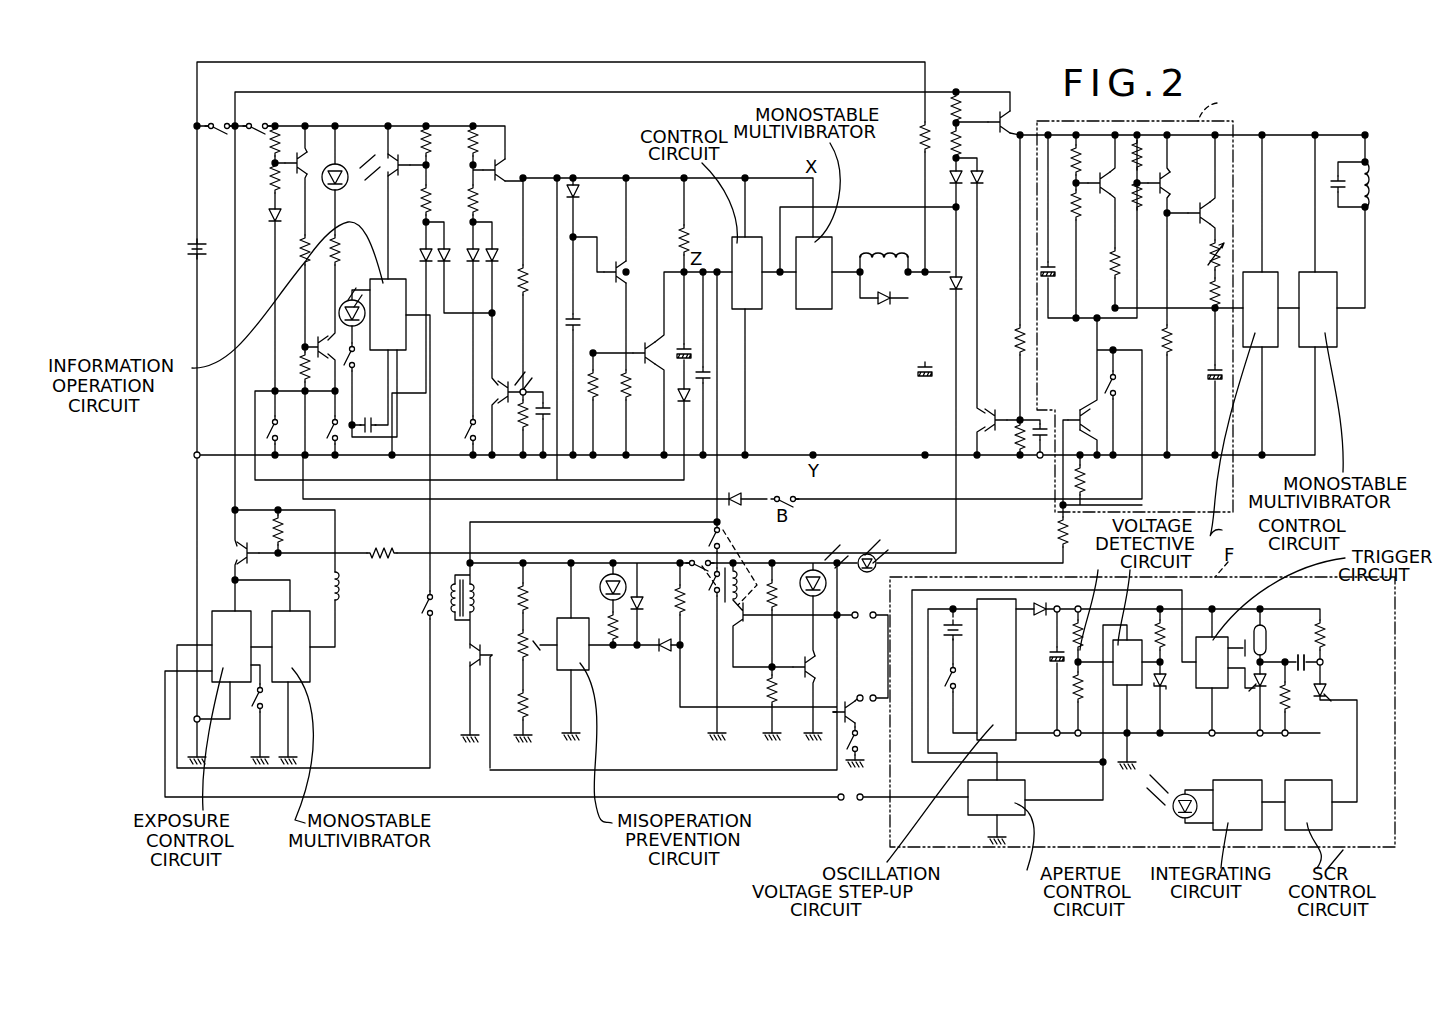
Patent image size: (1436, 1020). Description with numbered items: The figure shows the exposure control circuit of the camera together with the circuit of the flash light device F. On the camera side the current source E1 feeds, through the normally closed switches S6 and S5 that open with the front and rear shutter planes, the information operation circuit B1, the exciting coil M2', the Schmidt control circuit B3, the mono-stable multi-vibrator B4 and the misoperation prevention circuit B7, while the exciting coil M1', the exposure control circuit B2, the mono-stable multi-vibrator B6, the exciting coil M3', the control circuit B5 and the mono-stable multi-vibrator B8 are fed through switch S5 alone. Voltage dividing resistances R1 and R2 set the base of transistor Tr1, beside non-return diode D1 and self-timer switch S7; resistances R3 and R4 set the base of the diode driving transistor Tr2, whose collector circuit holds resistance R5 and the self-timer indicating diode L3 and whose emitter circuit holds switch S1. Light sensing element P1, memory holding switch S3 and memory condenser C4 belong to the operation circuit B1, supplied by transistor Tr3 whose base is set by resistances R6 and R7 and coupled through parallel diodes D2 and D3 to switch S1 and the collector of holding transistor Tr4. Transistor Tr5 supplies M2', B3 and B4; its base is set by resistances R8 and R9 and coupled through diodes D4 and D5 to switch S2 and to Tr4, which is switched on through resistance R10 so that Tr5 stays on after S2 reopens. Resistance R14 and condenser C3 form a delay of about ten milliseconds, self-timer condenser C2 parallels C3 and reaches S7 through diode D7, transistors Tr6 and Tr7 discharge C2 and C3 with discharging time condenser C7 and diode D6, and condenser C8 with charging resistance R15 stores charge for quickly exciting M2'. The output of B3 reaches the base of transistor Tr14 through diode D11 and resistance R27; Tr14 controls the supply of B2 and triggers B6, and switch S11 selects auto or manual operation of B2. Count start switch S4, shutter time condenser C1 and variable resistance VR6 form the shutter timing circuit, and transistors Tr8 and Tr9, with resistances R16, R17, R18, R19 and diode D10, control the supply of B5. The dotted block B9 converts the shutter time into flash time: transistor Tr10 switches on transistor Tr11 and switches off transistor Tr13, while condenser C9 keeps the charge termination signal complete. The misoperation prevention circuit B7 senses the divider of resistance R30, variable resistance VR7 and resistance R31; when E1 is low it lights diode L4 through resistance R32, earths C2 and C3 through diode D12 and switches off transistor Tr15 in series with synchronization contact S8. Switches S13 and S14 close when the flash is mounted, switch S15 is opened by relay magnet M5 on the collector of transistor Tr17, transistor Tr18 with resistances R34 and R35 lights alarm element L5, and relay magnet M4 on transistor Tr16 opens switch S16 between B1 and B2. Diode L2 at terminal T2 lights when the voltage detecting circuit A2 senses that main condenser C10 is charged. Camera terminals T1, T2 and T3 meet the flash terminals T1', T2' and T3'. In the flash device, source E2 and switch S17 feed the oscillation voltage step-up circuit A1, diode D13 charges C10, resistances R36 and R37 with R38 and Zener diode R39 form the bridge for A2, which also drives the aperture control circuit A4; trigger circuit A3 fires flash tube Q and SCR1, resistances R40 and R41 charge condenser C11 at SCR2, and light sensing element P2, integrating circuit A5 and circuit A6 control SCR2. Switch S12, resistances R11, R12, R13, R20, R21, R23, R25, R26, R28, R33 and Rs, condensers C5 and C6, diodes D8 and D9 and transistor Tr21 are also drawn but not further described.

The normally closed switch S5 is at (219, 117).
The normally closed switch S6 is at (257, 117).
The current source E1 is at (208, 249).
The voltage dividing resistance R1 is at (267, 141).
The voltage dividing resistance R2 is at (266, 178).
The non-return diode D1 is at (267, 217).
The transistor Tr1 is at (305, 160).
The voltage dividing resistance R3 is at (296, 250).
The voltage dividing resistance R4 is at (296, 367).
The resistance R5 is at (346, 250).
The illuminating diode L3 is at (346, 177).
The diode driving transistor Tr2 is at (313, 333).
The light sensing element P1 is at (356, 295).
The memory holding switch S3 is at (361, 357).
The memory condenser C4 is at (367, 415).
The information operation circuit B1 is at (388, 314).
The current supply control transistor Tr3 is at (388, 170).
The voltage dividing resistance R6 is at (437, 141).
The voltage dividing resistance R7 is at (437, 200).
The voltage dividing resistance R8 is at (844, 217).
The voltage dividing resistance R9 is at (484, 200).
The non-return diode D2 is at (419, 271).
The non-return diode D3 is at (440, 271).
The non-return diode D4 is at (465, 271).
The non-return diode D5 is at (487, 271).
The current supply control transistor Tr5 is at (507, 165).
The resistance R10 is at (539, 280).
The holding transistor Tr4 is at (494, 392).
The resistor R11 is at (510, 420).
The capacitor C5 is at (540, 426).
The switch S2 is at (459, 430).
The self-timer switch S7 is at (284, 430).
The switch S1 is at (324, 430).
The non-return diode D6 is at (585, 191).
The discharging transistor Tr6 is at (611, 265).
The discharging time controlling condenser C7 is at (581, 311).
The resistor R12 is at (608, 394).
The resistor R13 is at (642, 394).
The discharging transistor Tr7 is at (649, 342).
The delay resistance R14 is at (700, 240).
The self-timer time adjusting condenser C2 is at (678, 342).
The non-return diode D7 is at (676, 404).
The delay condenser C3 is at (714, 368).
The control circuit B3 is at (747, 273).
The mono-stable multi-vibrator circuit B4 is at (814, 273).
The exciting coil M2' is at (884, 245).
The diode D8 is at (883, 308).
The diode D11 is at (841, 391).
The charging resistance R15 is at (913, 137).
The voltage dividing resistance R16 is at (943, 108).
The voltage dividing resistance R17 is at (972, 143).
The current supply control transistor Tr8 is at (1016, 114).
The diode D9 is at (945, 178).
The diode D10 is at (994, 179).
The charge storing condenser C8 is at (914, 372).
The transistor Tr9 is at (979, 421).
The voltage dividing resistance R18 is at (1008, 340).
The voltage dividing resistance R19 is at (1007, 455).
The capacitor C6 is at (1035, 456).
The transistor Tr10 is at (1088, 406).
The count start switch S4 is at (1122, 385).
The resistor R23 is at (1096, 480).
The voltage dividing resistance R36 is at (1087, 583).
The condenser C9 is at (1028, 270).
The resistor R20 is at (1065, 160).
The resistor R21 is at (1065, 205).
The transistor Tr11 is at (1100, 204).
The resistor Rs is at (1106, 263).
The resistor R25 is at (1152, 178).
The transistor Tr21 is at (1178, 183).
The transistor Tr13 is at (1223, 213).
The variable resistance VR6 is at (1201, 254).
The resistor R26 is at (1183, 340).
The shutter time control condenser C1 is at (1207, 374).
The control signal producing circuit B9 is at (1229, 99).
The control circuit B5 is at (1260, 309).
The mono-stable multi-vibrator circuit B8 is at (1318, 309).
The main condenser C10 is at (1186, 423).
The exciting coil M3' is at (1390, 185).
The current supply control transistor Tr14 is at (232, 553).
The resistor R28 is at (294, 530).
The resistance R27 is at (384, 544).
The exciting coil M1' is at (353, 586).
The exposure control circuit B2 is at (231, 646).
The mono-stable multi-vibrator circuit B6 is at (291, 646).
The auto-manual change over switch S11 is at (275, 703).
The switch S16 is at (419, 607).
The relay magnet M4 is at (476, 598).
The transistor Tr16 is at (463, 655).
The resistance R30 is at (539, 598).
The variable resistance VR7 is at (509, 645).
The resistance R31 is at (539, 705).
The misoperation prevention circuit B7 is at (573, 644).
The illuminating diode L4 is at (606, 587).
The resistance R32 is at (612, 643).
The diode D12 is at (654, 605).
The non-return diode D13 is at (857, 637).
The resistor R33 is at (696, 600).
The switch S14 is at (694, 553).
The switch S13 is at (739, 538).
The switch S15 is at (686, 582).
The switch S12 is at (788, 491).
The relay magnet M5 is at (758, 566).
The resistance R34 is at (789, 572).
The alarm illuminating element L5 is at (819, 565).
The transistor Tr17 is at (785, 633).
The transistor Tr18 is at (799, 654).
The resistance R35 is at (760, 690).
The illuminating diode L2 is at (880, 579).
The accessory shoe terminal T2 is at (853, 631).
The automatic time change over terminal T2' is at (879, 631).
The terminal T1 is at (853, 688).
The synchronization terminal T1' is at (879, 688).
The transistor Tr15 is at (871, 716).
The synchronization contact S8 is at (867, 745).
The terminal T3 is at (843, 815).
The aperture control terminal T3' is at (867, 815).
The current source E2 is at (945, 630).
The current source switch S17 is at (939, 680).
The oscillation voltage step-up circuit A1 is at (996, 669).
The voltage dividing resistance R37 is at (1060, 691).
The voltage detecting circuit A2 is at (1127, 662).
The resistance R38 is at (1146, 631).
The Zener diode R39 is at (1147, 694).
The trigger circuit A3 is at (1212, 662).
The control SCR SCR1 is at (1243, 697).
The flash tube Q is at (1269, 633).
The condenser C11 is at (1308, 627).
The charging resistance R41 is at (1336, 635).
The SCR SCR2 is at (1350, 691).
The charging resistance R40 is at (1302, 698).
The aperture control circuit A4 is at (996, 797).
The integrating circuit A5 is at (1237, 805).
The SCR control circuit A6 is at (1308, 805).
The light sensing element P2 is at (1177, 819).